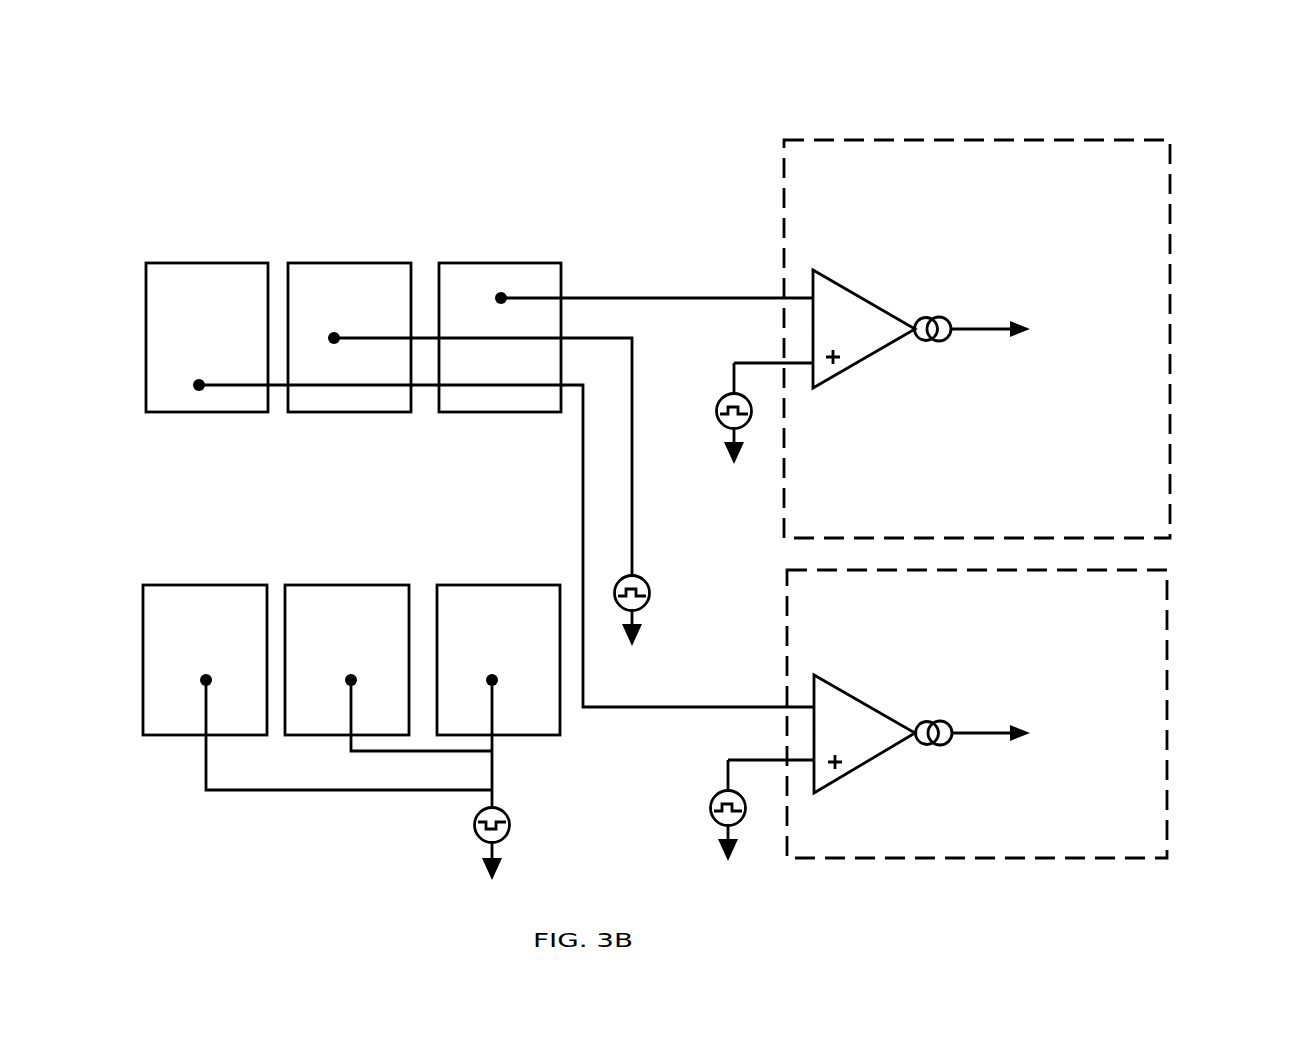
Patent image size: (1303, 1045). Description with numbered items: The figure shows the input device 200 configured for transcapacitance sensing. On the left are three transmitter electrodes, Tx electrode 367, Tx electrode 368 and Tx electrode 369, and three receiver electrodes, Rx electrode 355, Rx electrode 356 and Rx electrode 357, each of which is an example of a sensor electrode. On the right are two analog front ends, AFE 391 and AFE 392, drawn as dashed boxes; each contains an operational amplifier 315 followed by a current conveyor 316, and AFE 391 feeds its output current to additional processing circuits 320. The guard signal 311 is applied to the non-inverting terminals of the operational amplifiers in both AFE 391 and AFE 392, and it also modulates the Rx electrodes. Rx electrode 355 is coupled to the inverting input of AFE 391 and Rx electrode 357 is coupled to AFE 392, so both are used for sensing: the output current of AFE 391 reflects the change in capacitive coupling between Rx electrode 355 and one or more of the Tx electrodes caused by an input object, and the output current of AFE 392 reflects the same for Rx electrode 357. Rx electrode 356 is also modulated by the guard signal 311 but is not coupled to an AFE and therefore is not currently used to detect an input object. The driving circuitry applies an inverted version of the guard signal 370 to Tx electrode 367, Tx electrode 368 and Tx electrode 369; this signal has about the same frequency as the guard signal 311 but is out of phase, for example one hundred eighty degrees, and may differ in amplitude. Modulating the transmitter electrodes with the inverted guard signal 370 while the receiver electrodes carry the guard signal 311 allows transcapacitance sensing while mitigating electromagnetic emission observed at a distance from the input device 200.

The input device 200 is at (1302, 67).
The Rx electrode 355 is at (476, 250).
The Rx electrode 356 is at (314, 246).
The Rx electrode 357 is at (186, 250).
The Tx electrode 367 is at (182, 568).
The Tx electrode 368 is at (311, 568).
The Tx electrode 369 is at (474, 568).
The inverted version of the guard signal 370 is at (437, 840).
The guard signal 311 is at (707, 612).
The AFE 391 is at (1011, 239).
The AFE 392 is at (1006, 654).
The operational amplifier 315 is at (893, 360).
The current conveyor 316 is at (951, 303).
The additional processing circuits 320 is at (1042, 335).